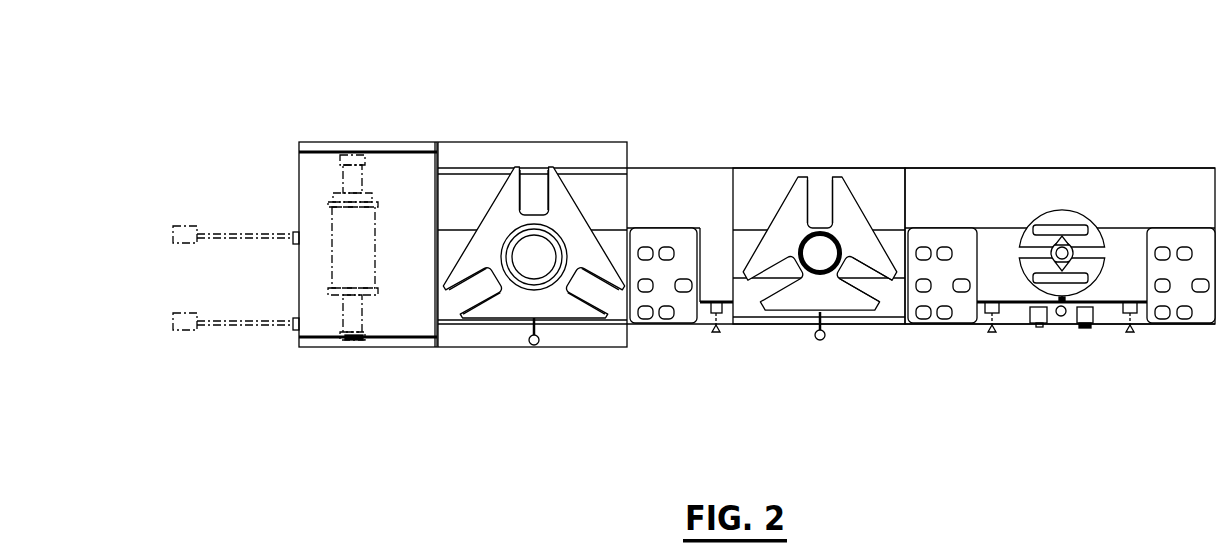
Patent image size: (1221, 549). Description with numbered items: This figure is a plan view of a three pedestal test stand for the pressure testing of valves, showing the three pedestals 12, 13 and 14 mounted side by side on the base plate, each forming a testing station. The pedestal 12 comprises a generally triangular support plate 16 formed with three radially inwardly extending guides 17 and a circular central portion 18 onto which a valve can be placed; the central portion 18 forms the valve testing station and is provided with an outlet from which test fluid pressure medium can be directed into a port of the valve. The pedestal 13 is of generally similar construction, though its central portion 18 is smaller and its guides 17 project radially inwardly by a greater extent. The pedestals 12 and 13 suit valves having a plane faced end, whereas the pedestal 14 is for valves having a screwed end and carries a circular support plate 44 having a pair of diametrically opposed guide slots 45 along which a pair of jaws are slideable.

The pedestal 12 is at (519, 366).
The pedestal 13 is at (783, 354).
The pedestal 14 is at (1016, 336).
The support plate 16 is at (560, 197).
The guides 17 is at (538, 190).
The central portion 18 is at (540, 257).
The circular support plate 44 is at (1062, 215).
The guide slots 45 is at (1077, 168).